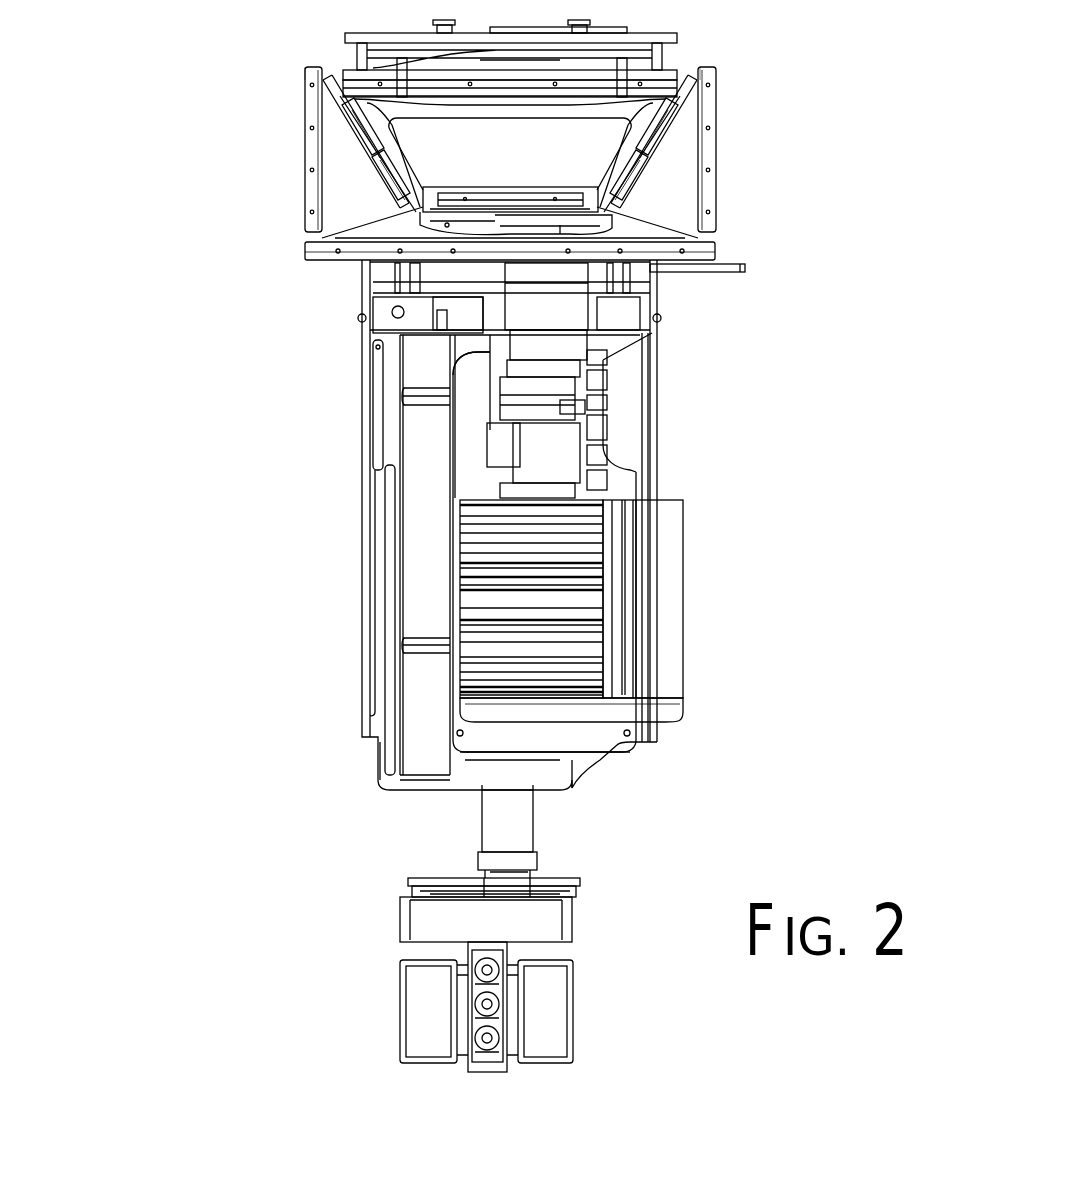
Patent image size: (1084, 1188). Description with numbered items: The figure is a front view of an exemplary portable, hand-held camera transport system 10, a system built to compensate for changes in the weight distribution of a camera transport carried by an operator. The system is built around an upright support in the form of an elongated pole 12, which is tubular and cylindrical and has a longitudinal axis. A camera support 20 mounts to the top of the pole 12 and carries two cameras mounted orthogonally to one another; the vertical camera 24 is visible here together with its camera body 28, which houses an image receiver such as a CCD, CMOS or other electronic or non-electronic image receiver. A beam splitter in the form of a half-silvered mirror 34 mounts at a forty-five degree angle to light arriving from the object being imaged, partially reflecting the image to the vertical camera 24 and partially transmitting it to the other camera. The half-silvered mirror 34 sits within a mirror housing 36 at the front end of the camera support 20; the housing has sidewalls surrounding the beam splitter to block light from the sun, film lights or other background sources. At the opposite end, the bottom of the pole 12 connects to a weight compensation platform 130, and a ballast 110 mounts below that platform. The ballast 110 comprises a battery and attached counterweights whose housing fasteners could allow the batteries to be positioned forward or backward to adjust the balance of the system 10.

The hand-held transport system 10 is at (246, 418).
The elongated pole 12 is at (530, 829).
The camera support 20 is at (696, 306).
The vertical camera 24 is at (427, 590).
The camera body 28 is at (458, 655).
The half-silvered mirror 34 is at (612, 146).
The mirror housing 36 is at (307, 237).
The ballast 110 is at (588, 916).
The weight compensation platform 130 is at (378, 900).